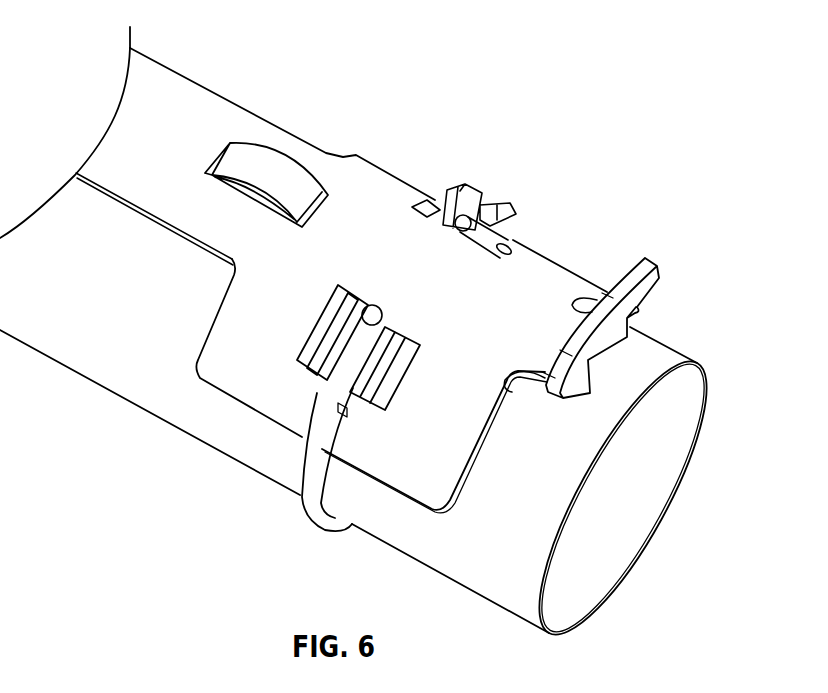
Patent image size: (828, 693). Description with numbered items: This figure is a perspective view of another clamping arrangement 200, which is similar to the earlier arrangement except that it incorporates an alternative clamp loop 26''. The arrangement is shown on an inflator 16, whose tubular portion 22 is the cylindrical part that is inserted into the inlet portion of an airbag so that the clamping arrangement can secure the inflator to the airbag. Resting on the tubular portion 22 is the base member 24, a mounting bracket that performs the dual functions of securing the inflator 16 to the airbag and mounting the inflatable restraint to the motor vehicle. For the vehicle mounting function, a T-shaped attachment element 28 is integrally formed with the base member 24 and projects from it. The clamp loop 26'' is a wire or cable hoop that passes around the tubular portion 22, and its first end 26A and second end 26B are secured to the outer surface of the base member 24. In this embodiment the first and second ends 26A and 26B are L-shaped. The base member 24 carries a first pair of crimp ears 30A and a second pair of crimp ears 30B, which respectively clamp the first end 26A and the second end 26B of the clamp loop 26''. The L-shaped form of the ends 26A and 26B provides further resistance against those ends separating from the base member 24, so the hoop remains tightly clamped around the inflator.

The clamping arrangement 200 is at (559, 97).
The inflator 16 is at (705, 446).
The tubular portion 22 is at (659, 357).
The base member 24 is at (553, 252).
The T-shaped attachment element 28 is at (633, 278).
The first end 26A is at (472, 207).
The first pair of crimp ears 30A is at (498, 203).
The second end 26B is at (357, 345).
The second pair of crimp ears 30B is at (378, 357).
The clamp loop 26'' is at (295, 471).